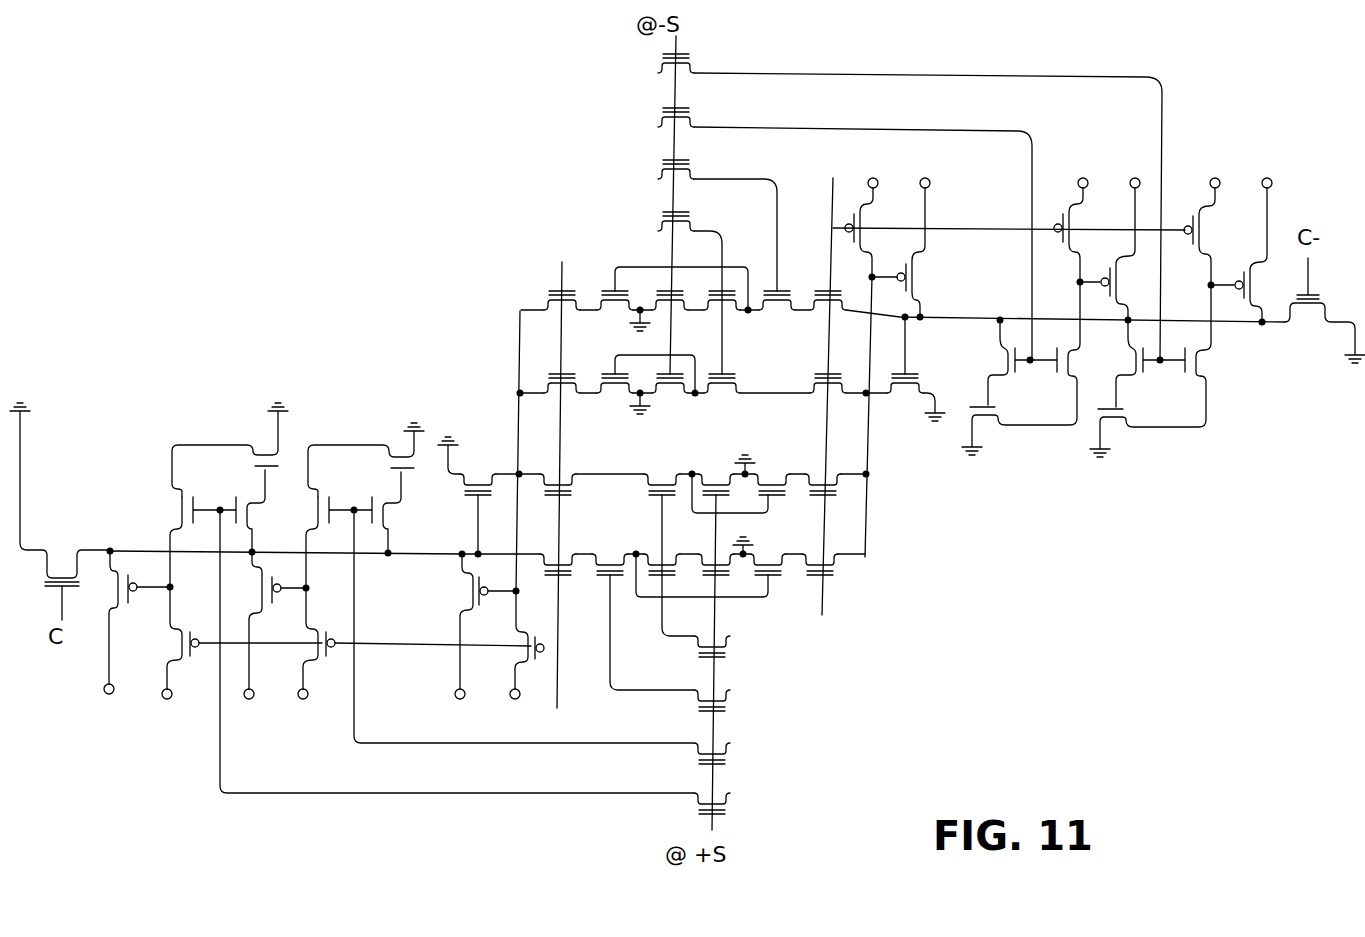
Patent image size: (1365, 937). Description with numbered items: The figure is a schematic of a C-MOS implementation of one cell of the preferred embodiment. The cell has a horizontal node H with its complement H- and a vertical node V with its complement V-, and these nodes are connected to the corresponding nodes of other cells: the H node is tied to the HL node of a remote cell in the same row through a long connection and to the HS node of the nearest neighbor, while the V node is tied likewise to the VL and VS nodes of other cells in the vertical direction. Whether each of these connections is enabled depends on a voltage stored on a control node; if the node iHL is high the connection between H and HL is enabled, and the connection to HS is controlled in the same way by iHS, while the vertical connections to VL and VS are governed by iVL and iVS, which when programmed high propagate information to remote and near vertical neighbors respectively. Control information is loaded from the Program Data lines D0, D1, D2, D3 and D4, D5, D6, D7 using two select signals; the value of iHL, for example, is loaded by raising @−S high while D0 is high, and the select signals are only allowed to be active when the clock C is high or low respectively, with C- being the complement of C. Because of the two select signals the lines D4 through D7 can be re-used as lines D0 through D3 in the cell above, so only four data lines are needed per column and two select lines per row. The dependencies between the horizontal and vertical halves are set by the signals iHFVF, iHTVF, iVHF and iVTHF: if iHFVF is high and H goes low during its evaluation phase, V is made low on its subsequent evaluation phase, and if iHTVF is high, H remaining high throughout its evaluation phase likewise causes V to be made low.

The Program Data line D7 is at (658, 73).
The Program Data line D6 is at (658, 127).
The Program Data line D5 is at (658, 179).
The Program Data line D4 is at (658, 231).
The Program Data line D3 is at (730, 636).
The Program Data line D2 is at (730, 690).
The Program Data line D1 is at (730, 743).
The Program Data line D0 is at (730, 793).
The vertical short-connection control node iVS is at (928, 206).
The vertical long-connection control node iVL is at (863, 233).
The vertical-to-horizontal dependency control signal iVHF is at (735, 221).
The vertical-true-to-horizontal-false control signal iVTHF is at (726, 289).
The horizontal-true-to-vertical-false control signal iHTVF is at (657, 581).
The horizontal-false-to-vertical-false control signal iHFVF is at (651, 649).
The horizontal long-connection control node iHL is at (524, 640).
The horizontal short-connection control node iHS is at (457, 667).
The horizontal short-connection node HS is at (234, 551).
The horizontal long-connection node HL is at (365, 559).
The vertical long-connection node VL is at (1025, 318).
The vertical short-connection node VS is at (1155, 318).
The horizontal node H is at (652, 505).
The horizontal node complement H- is at (487, 567).
The vertical node V is at (875, 417).
The vertical node complement V- is at (1065, 306).
The clock C is at (823, 385).
The clock complement C- is at (546, 473).